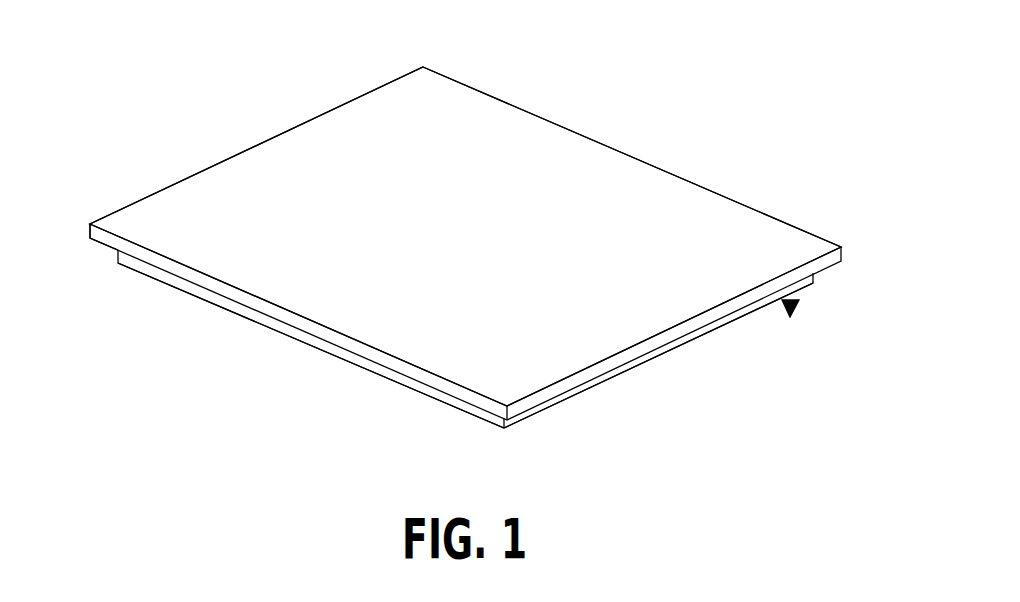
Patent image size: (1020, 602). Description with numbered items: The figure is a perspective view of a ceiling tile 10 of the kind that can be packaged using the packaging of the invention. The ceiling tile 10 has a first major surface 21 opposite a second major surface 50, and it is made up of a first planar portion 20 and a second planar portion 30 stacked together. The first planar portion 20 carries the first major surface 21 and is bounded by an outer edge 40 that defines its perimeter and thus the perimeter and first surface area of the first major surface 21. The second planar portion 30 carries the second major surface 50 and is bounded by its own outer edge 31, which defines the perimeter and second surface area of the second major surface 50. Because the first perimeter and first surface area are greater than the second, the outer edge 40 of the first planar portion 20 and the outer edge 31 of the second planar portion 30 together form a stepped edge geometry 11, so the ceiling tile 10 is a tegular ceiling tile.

The ceiling tile 10 is at (659, 65).
The stepped edge geometry 11 is at (800, 310).
The first planar portion 20 is at (449, 219).
The first major surface 21 is at (717, 230).
The second planar portion 30 is at (491, 339).
The outer edge 31 is at (240, 307).
The outer edge 40 is at (95, 232).
The second major surface 50 is at (656, 358).